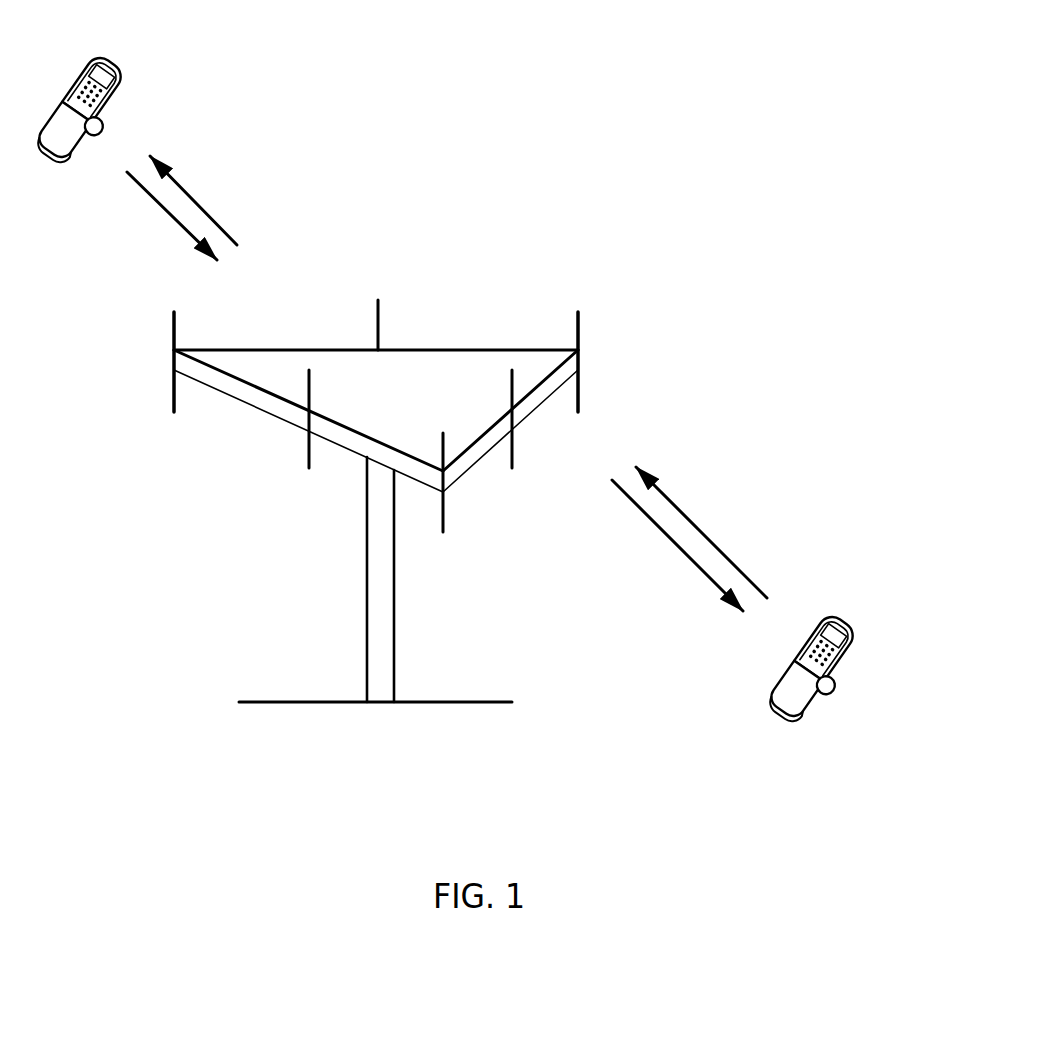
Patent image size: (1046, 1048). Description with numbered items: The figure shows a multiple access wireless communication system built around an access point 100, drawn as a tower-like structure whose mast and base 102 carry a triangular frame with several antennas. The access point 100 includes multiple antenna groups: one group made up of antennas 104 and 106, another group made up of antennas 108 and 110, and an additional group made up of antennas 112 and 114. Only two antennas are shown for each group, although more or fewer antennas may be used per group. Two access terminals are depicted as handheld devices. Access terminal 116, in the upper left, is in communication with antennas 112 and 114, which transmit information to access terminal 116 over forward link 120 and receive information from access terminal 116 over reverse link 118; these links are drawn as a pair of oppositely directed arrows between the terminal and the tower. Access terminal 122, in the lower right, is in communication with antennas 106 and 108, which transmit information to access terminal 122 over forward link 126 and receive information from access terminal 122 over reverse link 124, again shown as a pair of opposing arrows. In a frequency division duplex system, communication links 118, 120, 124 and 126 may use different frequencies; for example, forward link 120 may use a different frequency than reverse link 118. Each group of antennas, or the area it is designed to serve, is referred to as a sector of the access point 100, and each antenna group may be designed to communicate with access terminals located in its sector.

The access point 100 is at (656, 94).
The base station 102 is at (381, 703).
The antenna 104 is at (581, 322).
The antenna 106 is at (512, 466).
The antenna 108 is at (443, 530).
The antenna 110 is at (309, 464).
The antenna 112 is at (177, 320).
The antenna 114 is at (380, 303).
The access terminal 116 is at (110, 63).
The reverse link 118 is at (191, 198).
The forward link 120 is at (172, 217).
The access terminal 122 is at (845, 620).
The reverse link 124 is at (673, 548).
The forward link 126 is at (697, 523).